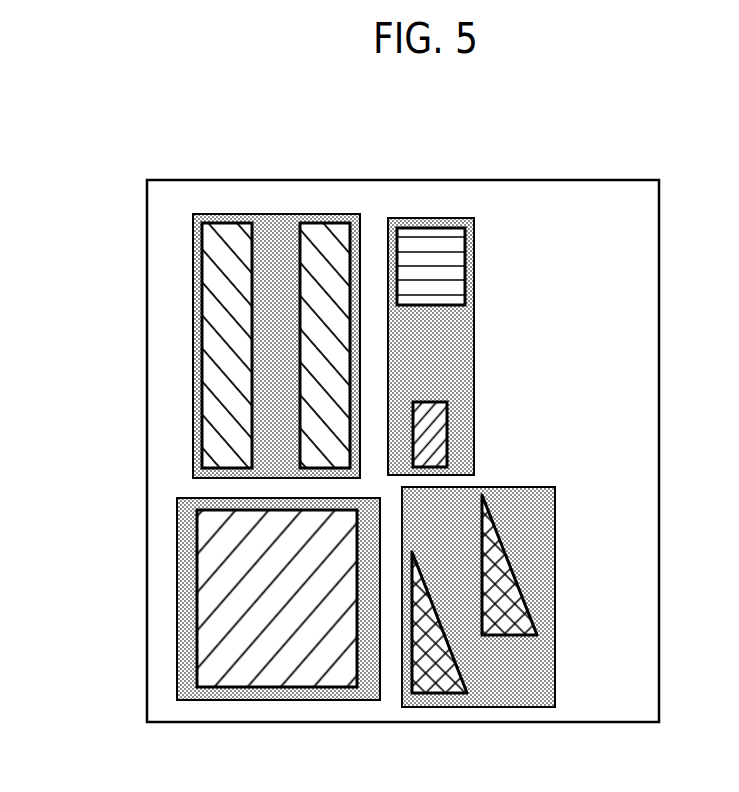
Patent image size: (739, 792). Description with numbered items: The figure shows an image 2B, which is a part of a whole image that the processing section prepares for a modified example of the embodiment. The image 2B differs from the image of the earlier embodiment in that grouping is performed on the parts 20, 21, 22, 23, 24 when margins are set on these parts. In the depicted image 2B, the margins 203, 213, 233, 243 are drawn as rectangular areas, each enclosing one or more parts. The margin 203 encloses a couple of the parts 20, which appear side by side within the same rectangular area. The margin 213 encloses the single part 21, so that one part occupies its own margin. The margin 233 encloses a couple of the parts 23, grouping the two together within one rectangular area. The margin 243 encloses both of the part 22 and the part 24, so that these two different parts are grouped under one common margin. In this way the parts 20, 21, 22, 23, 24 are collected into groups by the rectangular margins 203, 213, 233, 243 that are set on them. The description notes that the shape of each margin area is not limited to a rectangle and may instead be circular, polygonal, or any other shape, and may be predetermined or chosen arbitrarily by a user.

The image 2B is at (612, 176).
The part 20 is at (218, 222).
The margin 203 is at (276, 228).
The part 21 is at (200, 585).
The margin 213 is at (190, 543).
The part 22 is at (447, 432).
The part 24 is at (465, 275).
The margin 243 is at (455, 350).
The part 23 is at (500, 567).
The margin 233 is at (535, 522).